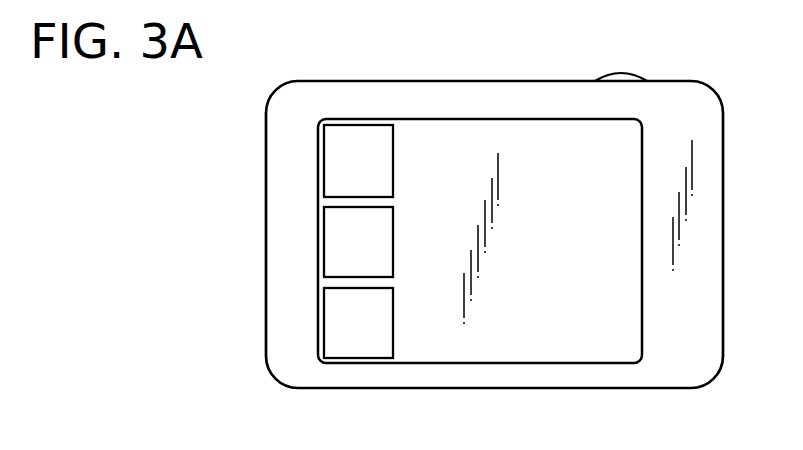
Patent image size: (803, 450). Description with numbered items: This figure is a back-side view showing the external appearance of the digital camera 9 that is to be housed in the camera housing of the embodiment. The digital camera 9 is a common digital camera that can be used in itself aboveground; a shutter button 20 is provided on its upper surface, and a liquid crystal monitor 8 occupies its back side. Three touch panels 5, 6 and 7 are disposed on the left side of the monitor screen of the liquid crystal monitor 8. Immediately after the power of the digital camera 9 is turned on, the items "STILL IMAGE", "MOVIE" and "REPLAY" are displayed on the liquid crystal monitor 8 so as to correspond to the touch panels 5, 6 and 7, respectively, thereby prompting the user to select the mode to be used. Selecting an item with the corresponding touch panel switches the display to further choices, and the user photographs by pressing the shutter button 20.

The touch panel 5 is at (357, 138).
The touch panel 6 is at (338, 223).
The touch panel 7 is at (368, 343).
The liquid crystal monitor 8 is at (530, 352).
The digital camera 9 is at (687, 373).
The shutter button 20 is at (642, 75).